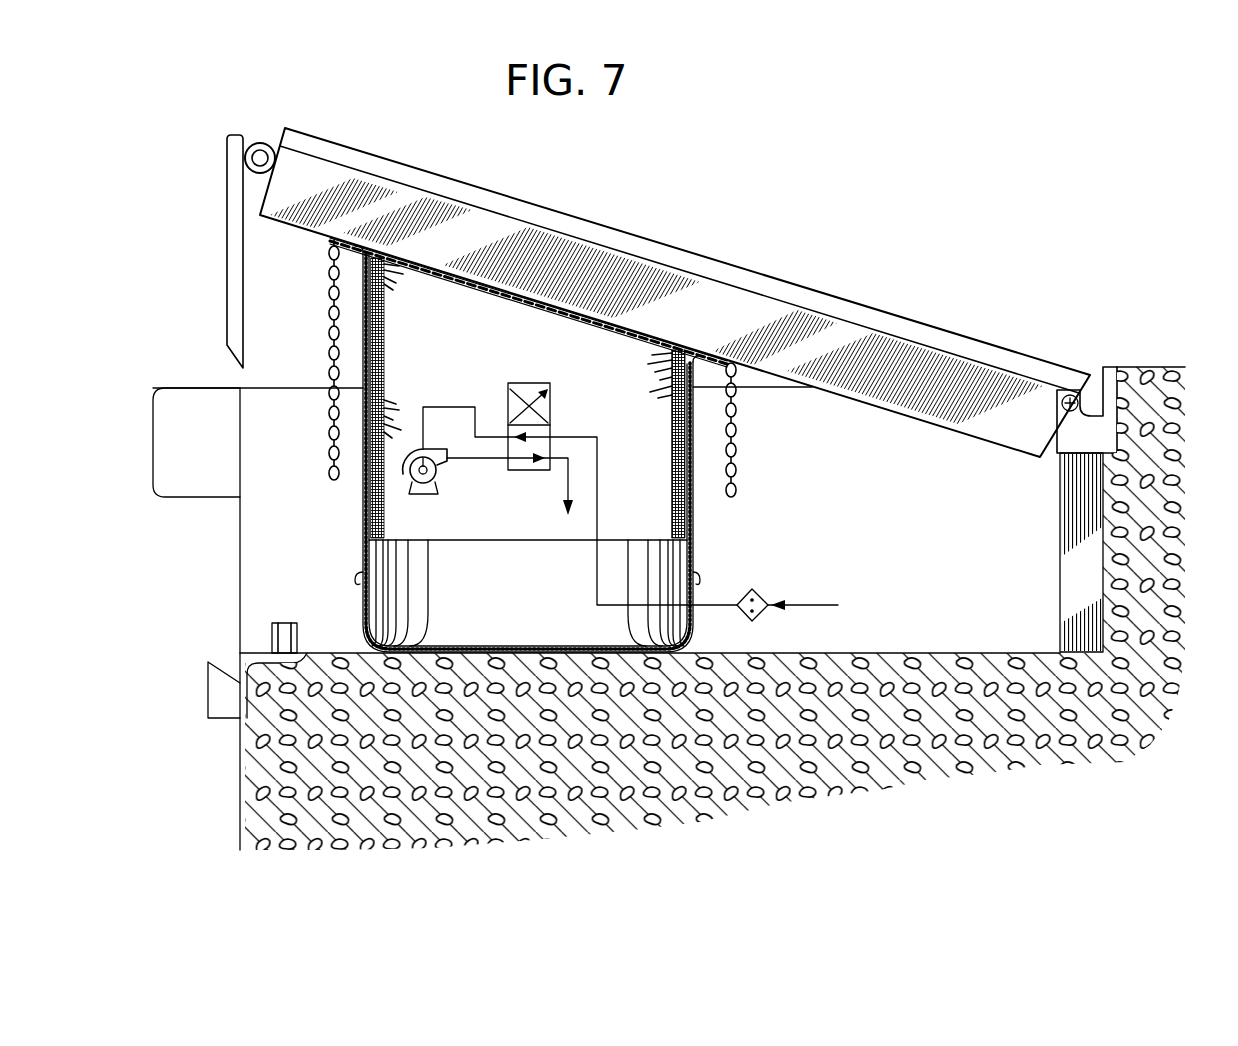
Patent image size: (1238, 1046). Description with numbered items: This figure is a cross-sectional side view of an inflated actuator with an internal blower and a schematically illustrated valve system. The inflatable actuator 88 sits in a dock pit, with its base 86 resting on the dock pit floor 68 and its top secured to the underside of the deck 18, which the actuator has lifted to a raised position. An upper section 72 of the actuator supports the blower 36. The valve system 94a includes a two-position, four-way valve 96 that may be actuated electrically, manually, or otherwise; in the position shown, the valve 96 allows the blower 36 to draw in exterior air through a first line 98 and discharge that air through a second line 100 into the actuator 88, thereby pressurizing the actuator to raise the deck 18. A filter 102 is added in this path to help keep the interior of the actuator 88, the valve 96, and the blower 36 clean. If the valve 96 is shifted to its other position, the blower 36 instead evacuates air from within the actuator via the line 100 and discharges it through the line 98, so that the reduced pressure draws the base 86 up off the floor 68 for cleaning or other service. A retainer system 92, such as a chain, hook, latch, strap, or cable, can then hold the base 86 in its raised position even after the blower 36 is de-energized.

The deck 18 is at (707, 256).
The blower 36 is at (440, 478).
The dock pit floor 68 is at (923, 652).
The upper section 72 is at (693, 517).
The base 86 is at (360, 627).
The inflatable actuator 88 is at (784, 518).
The retainer system 92 is at (335, 497).
The valve system 94a is at (500, 360).
The 2-position, 4-way valve 96 is at (552, 403).
The first line 98 is at (812, 602).
The second line 100 is at (566, 478).
The filter 102 is at (763, 618).